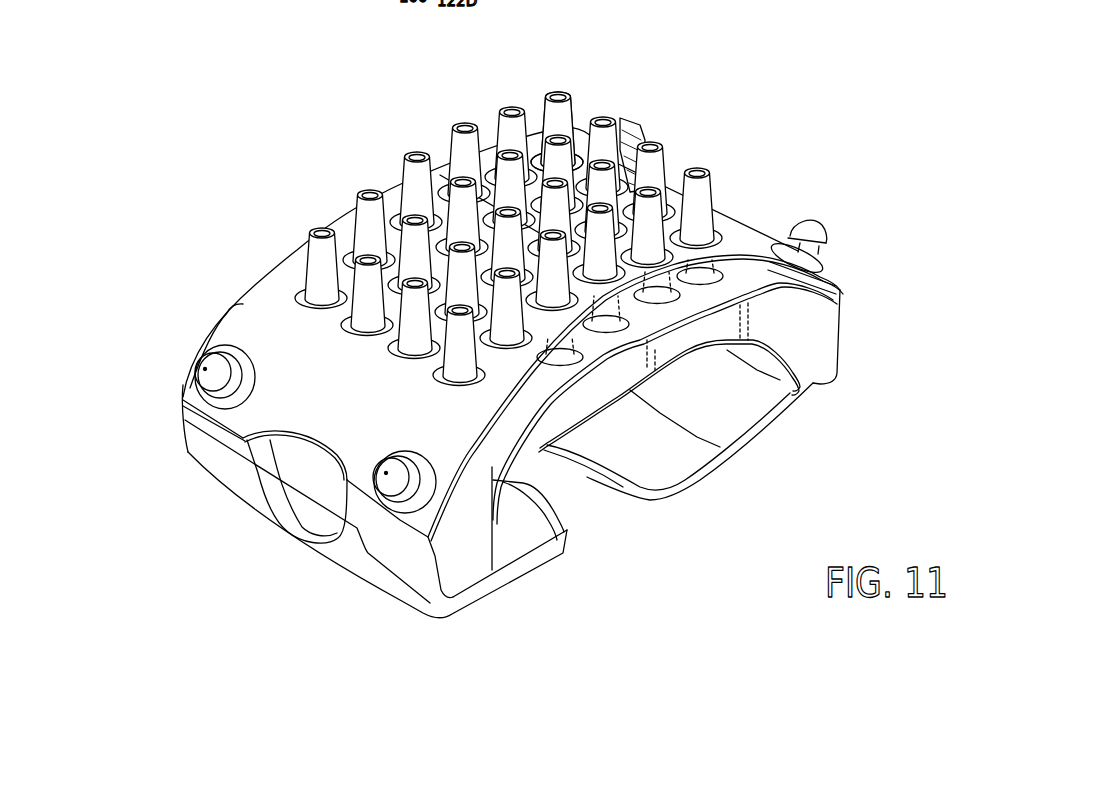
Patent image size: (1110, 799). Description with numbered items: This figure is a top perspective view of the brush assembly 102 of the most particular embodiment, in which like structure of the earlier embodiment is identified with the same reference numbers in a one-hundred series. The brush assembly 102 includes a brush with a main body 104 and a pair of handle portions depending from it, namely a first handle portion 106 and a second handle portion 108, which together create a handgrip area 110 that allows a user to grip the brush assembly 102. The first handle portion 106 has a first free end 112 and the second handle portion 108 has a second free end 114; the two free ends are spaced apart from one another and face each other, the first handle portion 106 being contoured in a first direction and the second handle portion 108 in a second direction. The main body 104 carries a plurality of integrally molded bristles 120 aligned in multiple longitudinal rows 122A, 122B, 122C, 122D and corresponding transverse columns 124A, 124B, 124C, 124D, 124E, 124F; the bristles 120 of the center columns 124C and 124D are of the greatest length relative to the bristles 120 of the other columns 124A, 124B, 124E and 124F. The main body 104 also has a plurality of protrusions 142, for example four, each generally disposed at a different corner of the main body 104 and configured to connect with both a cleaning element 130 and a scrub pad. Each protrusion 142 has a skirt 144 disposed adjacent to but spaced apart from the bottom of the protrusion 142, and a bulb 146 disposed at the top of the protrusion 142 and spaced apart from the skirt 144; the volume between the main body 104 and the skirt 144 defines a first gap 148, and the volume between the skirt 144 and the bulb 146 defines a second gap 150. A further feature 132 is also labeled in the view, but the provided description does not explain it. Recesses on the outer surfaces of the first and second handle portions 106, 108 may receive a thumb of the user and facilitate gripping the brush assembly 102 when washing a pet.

The brush assembly 102 is at (222, 135).
The main body 104 is at (213, 475).
The first handle portion 106 is at (477, 593).
The second handle portion 108 is at (763, 427).
The handgrip area 110 is at (577, 483).
The first free end 112 is at (550, 540).
The second free end 114 is at (650, 470).
The bristles 120 is at (410, 187).
The longitudinal row 122A is at (577, 88).
The longitudinal row 122B is at (628, 115).
The longitudinal row 122C is at (667, 140).
The longitudinal row 122D is at (709, 165).
The transverse column 124A is at (300, 224).
The transverse column 124B is at (338, 183).
The center bristle column 124C is at (409, 148).
The center bristle column 124D is at (465, 110).
The transverse column 124E is at (510, 98).
The transverse column 124F is at (551, 80).
The cleaning element 130 is at (277, 274).
The spike base recess 132 is at (447, 162).
The protrusion 142 is at (856, 233).
The skirt 144 is at (818, 268).
The bulb 146 is at (810, 222).
The first gap 148 is at (800, 283).
The second gap 150 is at (783, 233).